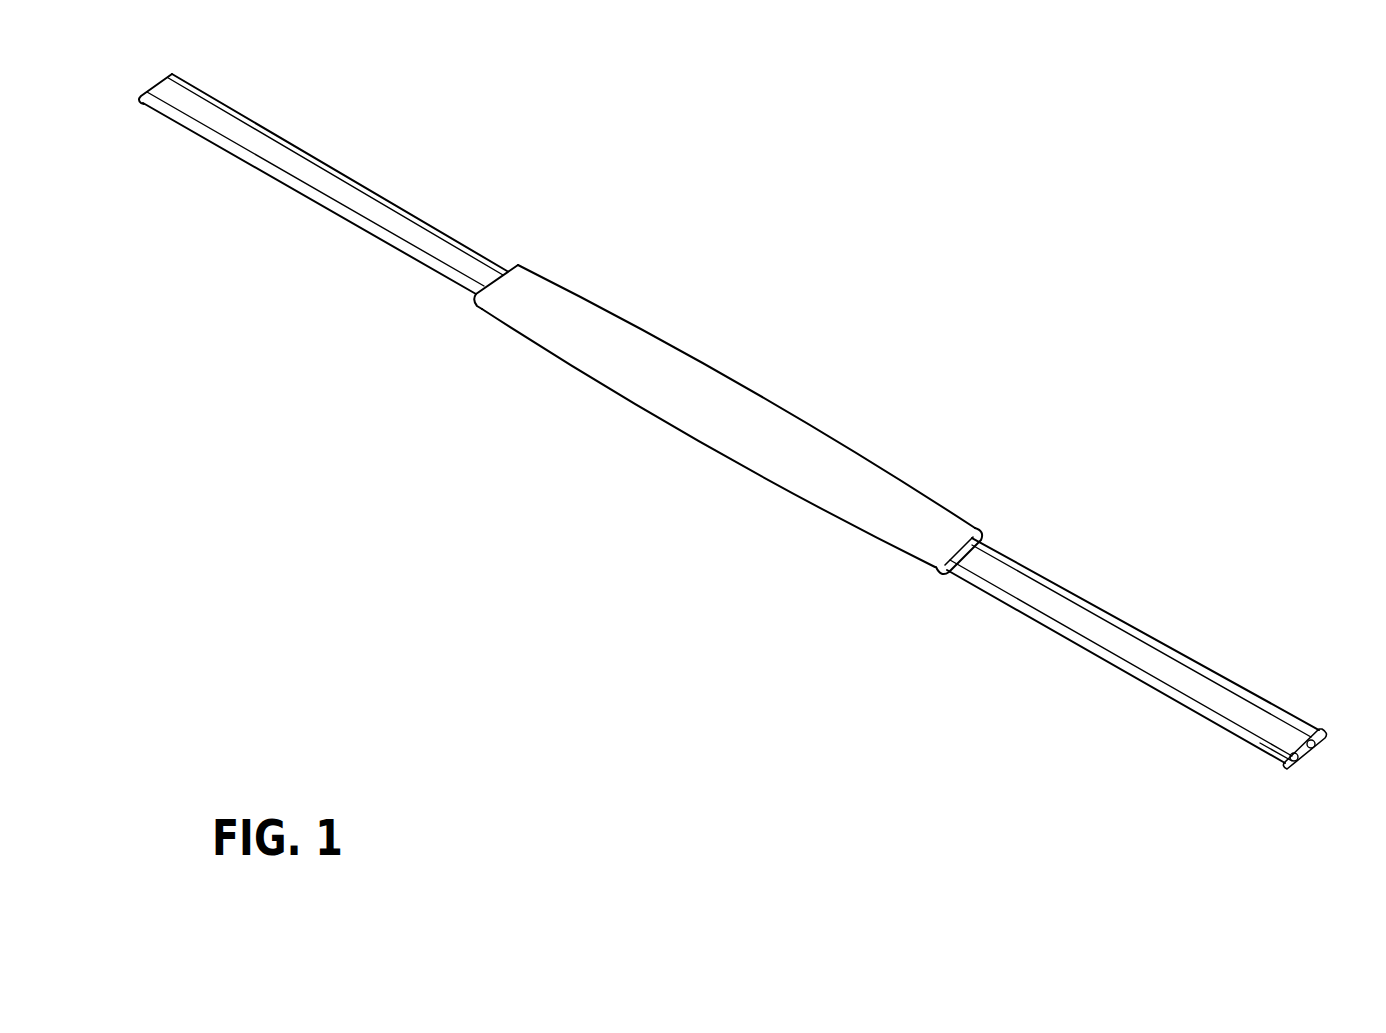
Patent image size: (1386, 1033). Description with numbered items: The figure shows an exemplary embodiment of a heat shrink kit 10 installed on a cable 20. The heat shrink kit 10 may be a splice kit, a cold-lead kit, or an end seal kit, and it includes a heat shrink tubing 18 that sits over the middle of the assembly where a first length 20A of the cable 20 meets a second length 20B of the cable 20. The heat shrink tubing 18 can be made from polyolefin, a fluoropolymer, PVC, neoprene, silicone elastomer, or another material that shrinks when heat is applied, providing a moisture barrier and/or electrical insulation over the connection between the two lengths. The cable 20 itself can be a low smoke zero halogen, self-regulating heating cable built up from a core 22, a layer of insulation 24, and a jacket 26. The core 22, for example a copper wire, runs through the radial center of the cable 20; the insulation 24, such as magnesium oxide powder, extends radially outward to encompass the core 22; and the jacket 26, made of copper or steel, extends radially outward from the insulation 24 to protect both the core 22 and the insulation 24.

The heat shrink kit 10 is at (733, 441).
The heat shrink tubing 18 is at (747, 388).
The cable 20 is at (733, 441).
The first length of the cable 20A is at (525, 242).
The second length of the cable 20B is at (1147, 672).
The core 22 is at (1316, 726).
The insulation 24 is at (1331, 755).
The jacket 26 is at (1245, 761).